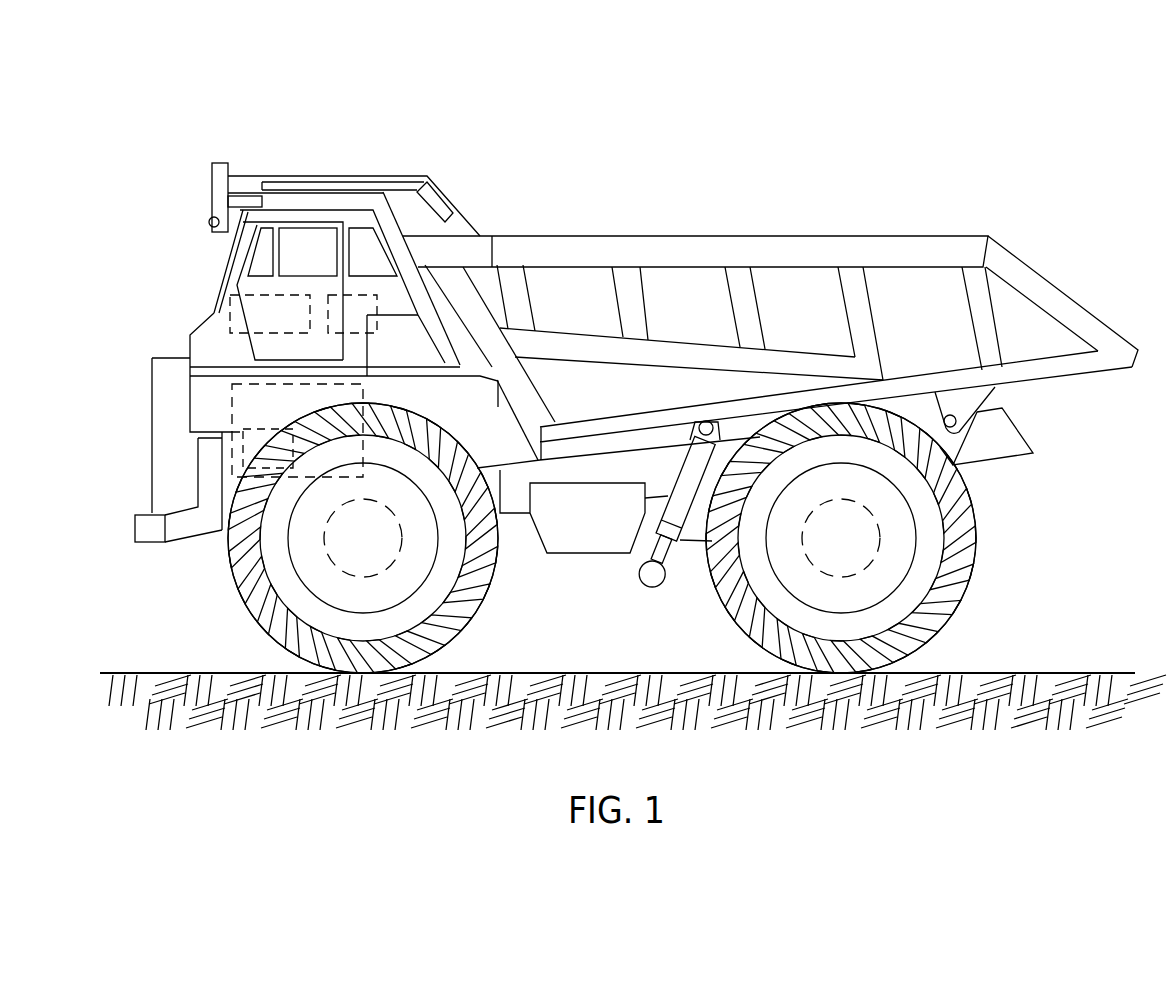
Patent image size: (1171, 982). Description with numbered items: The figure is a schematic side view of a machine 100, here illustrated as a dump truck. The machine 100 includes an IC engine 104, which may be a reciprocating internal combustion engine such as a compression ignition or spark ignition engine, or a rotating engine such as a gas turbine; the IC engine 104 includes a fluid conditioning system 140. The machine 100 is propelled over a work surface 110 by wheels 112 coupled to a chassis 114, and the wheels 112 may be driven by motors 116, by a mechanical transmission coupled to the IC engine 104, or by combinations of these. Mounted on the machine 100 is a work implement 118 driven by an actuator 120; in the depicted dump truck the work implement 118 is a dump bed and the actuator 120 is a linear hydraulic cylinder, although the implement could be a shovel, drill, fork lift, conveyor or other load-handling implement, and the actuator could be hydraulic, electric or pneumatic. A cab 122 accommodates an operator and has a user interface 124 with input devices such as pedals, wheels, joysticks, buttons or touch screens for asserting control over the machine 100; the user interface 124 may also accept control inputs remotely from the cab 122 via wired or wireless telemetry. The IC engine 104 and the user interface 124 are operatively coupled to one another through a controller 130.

The machine 100 is at (889, 100).
The IC engine 104 is at (232, 392).
The work surface 110 is at (1112, 670).
The wheels 112 is at (445, 620).
The chassis 114 is at (512, 497).
The motors 116 is at (332, 560).
The work implement 118 is at (920, 232).
The actuator 120 is at (664, 590).
The cab 122 is at (146, 222).
The user interface 124 is at (230, 302).
The controller 130 is at (368, 295).
The fluid conditioning system 140 is at (243, 435).